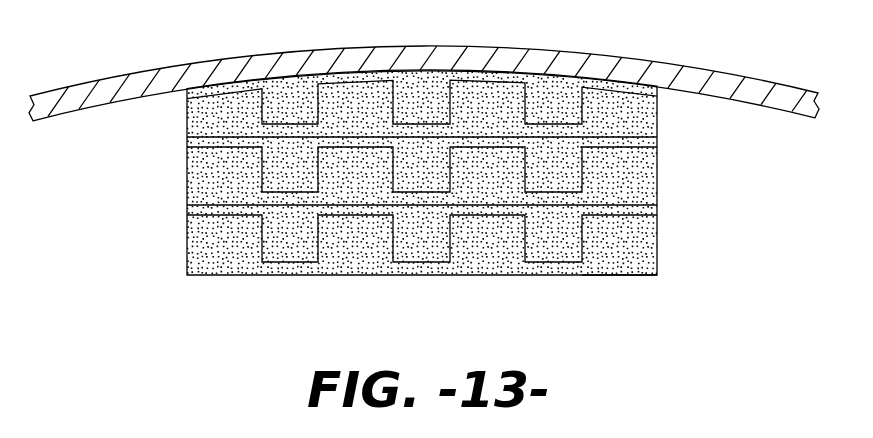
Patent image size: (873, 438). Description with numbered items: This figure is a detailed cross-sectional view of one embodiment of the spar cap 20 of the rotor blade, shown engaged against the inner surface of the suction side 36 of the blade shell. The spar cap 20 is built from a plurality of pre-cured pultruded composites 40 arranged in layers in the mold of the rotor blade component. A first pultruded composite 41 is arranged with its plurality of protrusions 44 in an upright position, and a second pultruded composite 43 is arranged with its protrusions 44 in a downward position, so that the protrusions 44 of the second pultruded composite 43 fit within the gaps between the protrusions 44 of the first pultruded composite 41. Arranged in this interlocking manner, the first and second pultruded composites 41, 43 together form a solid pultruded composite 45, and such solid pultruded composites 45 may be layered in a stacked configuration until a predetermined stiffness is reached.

The spar cap 20 is at (390, 199).
The suction side 36 is at (173, 65).
The pultruded composite 40 is at (658, 192).
The first pultruded composite 41 is at (622, 255).
The second pultruded composite 43 is at (186, 212).
The protrusions 44 is at (283, 246).
The solid pultruded composite 45 is at (687, 205).